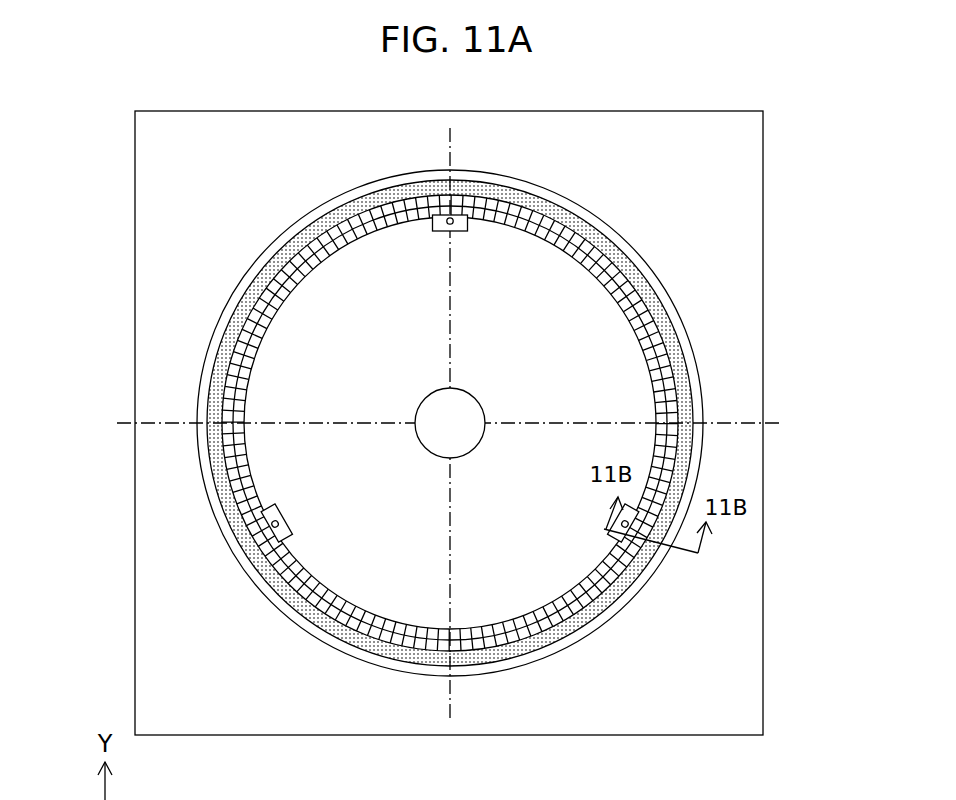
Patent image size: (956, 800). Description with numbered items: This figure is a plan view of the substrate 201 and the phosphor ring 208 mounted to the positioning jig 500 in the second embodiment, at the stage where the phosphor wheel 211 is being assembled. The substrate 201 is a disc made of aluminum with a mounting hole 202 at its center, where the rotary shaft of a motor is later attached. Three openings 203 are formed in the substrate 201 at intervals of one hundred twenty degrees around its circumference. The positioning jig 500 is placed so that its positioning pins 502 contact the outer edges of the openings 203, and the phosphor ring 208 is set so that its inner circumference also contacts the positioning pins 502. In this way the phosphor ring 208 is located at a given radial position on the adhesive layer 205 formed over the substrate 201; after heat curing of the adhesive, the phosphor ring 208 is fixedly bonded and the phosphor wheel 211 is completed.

The positioning jig 500 is at (688, 110).
The positioning pins 502 is at (695, 445).
The substrate 201 is at (218, 318).
The phosphor wheel 211 is at (600, 202).
The adhesive layer 205 is at (657, 307).
The phosphor ring 208 is at (260, 577).
The openings 203 is at (470, 218).
The mounting hole 202 is at (427, 400).